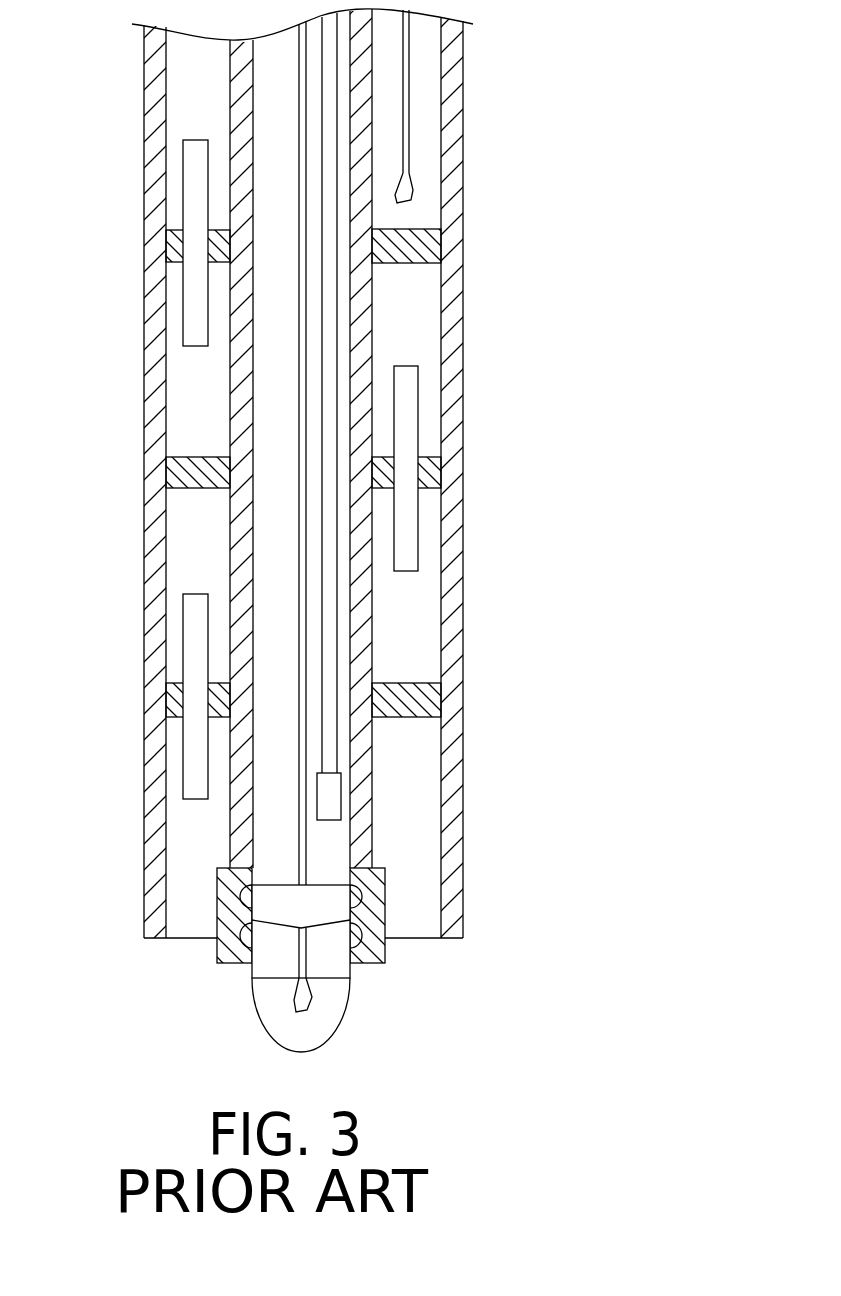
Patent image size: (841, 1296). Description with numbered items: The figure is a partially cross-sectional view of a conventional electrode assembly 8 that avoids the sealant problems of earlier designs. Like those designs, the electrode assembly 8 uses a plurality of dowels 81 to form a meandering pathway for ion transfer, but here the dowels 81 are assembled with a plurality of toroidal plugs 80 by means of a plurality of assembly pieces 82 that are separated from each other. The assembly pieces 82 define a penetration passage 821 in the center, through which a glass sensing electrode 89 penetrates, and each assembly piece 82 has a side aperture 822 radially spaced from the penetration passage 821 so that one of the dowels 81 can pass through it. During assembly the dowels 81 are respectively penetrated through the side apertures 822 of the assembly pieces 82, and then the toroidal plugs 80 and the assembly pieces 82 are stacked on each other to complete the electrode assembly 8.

The electrode assembly 8 is at (507, 392).
The toroidal plug 80 is at (403, 297).
The dowel 81 is at (190, 178).
The assembly piece 82 is at (296, 502).
The penetration passage 821 is at (360, 709).
The side aperture 822 is at (186, 708).
The glass sensing electrode 89 is at (327, 850).